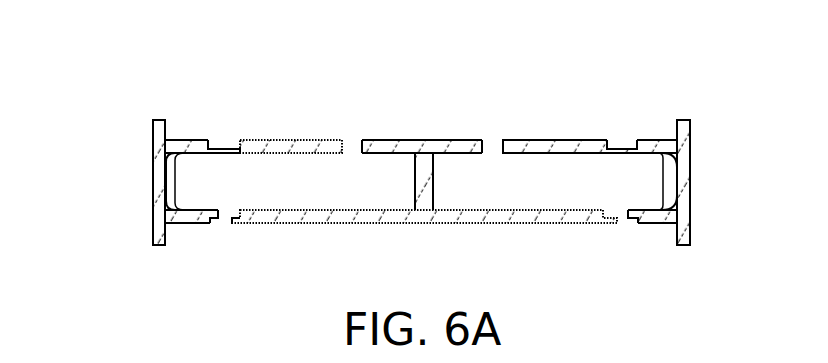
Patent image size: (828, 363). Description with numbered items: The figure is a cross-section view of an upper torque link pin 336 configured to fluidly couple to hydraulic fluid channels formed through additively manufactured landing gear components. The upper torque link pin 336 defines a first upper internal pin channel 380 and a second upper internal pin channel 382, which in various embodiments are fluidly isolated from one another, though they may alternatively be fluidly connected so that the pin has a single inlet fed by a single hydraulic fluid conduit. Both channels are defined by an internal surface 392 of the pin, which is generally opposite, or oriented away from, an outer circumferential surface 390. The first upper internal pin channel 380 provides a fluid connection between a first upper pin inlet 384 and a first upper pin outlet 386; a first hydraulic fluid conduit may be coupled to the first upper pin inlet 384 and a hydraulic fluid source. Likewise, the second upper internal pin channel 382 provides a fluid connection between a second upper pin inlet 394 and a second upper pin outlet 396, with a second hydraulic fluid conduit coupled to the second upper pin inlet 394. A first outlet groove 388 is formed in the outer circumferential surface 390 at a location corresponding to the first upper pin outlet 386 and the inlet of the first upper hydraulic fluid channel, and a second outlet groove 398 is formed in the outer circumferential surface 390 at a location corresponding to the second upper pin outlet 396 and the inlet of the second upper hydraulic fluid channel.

The upper torque link pin 336 is at (112, 84).
The first upper internal pin channel 380 is at (288, 173).
The second upper internal pin channel 382 is at (552, 178).
The first upper pin inlet 384 is at (350, 133).
The first upper pin outlet 386 is at (229, 218).
The first outlet groove 388 is at (213, 132).
The outer circumferential surface 390 is at (428, 139).
The internal surface 392 is at (382, 153).
The second upper pin inlet 394 is at (483, 133).
The second upper pin outlet 396 is at (630, 219).
The second outlet groove 398 is at (623, 132).